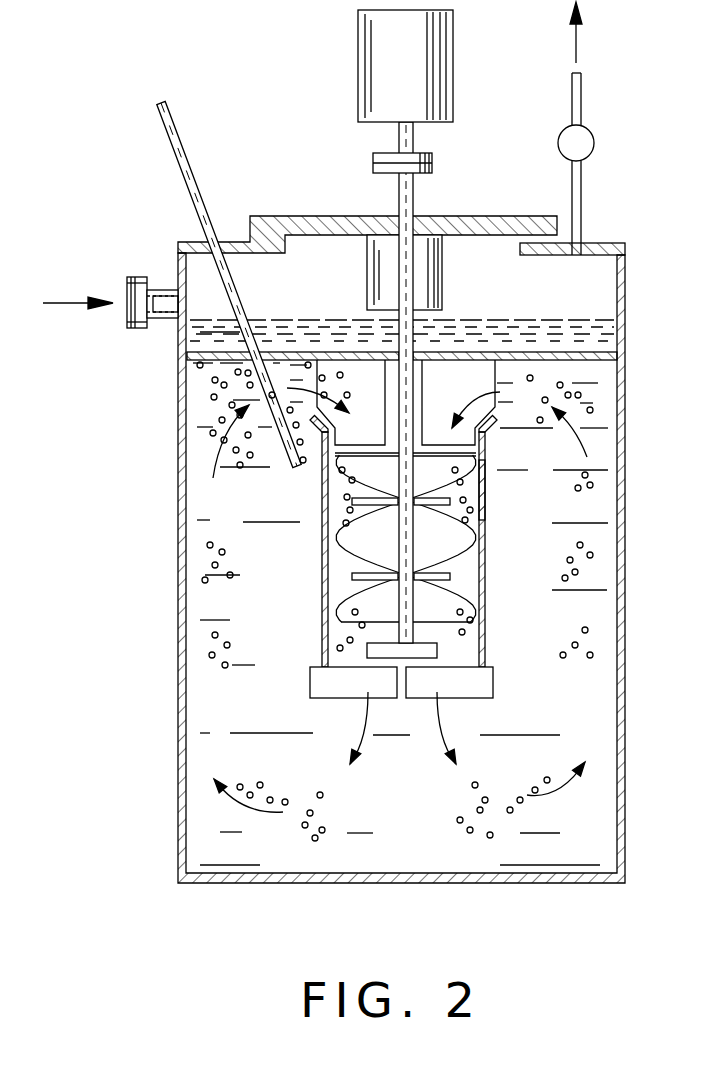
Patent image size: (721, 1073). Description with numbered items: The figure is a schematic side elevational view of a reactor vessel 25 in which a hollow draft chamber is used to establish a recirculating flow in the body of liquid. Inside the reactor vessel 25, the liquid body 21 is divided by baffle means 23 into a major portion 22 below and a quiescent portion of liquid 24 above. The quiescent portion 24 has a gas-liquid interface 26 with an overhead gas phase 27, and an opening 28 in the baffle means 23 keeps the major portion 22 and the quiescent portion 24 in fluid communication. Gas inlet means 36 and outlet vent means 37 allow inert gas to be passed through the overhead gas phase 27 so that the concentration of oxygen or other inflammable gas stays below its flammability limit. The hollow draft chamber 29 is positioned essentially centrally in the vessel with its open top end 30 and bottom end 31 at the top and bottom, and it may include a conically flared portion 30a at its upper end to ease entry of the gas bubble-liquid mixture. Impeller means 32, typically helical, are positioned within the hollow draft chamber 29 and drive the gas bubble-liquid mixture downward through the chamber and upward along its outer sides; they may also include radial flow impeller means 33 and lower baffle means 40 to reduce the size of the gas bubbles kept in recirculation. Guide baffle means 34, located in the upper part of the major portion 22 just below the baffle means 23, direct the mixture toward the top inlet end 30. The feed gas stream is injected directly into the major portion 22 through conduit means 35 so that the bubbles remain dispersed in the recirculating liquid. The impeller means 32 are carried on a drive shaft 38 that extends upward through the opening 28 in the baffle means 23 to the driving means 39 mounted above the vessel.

The liquid body 21 is at (610, 403).
The major portion of liquid body 22 is at (600, 572).
The baffle means 23 is at (565, 355).
The quiescent portion of liquid 24 is at (205, 333).
The reactor vessel 25 is at (641, 490).
The gas-liquid interface 26 is at (596, 318).
The overhead gas phase 27 is at (600, 277).
The opening in baffle means 28 is at (393, 350).
The hollow draft chamber 29 is at (487, 588).
The top end of hollow draft chamber 30 is at (310, 423).
The conically flared portion 30a is at (493, 436).
The bottom end of hollow draft chamber 31 is at (342, 677).
The impeller means 32 is at (477, 532).
The radial flow impeller means 33 is at (437, 651).
The guide baffle means 34 is at (455, 363).
The conduit means 35 is at (187, 152).
The gas inlet means 36 is at (127, 283).
The outlet vent means 37 is at (582, 108).
The drive shaft 38 is at (482, 492).
The driving means 39 is at (357, 96).
The lower baffle means 40 is at (490, 686).